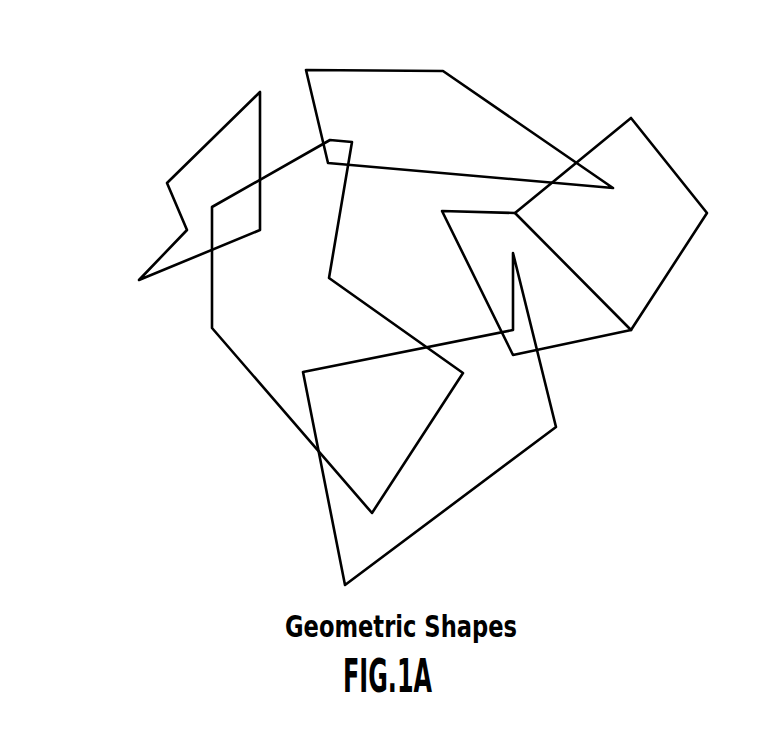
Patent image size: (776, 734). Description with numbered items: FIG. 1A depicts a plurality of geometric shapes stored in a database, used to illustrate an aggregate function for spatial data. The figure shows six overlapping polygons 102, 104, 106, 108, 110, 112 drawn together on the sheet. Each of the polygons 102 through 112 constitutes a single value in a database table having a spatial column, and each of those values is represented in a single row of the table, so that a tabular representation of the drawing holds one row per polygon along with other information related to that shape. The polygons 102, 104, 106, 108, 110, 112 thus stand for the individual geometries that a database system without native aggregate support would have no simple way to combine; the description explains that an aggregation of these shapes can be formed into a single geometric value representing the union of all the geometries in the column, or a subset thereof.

The polygon 102 is at (475, 90).
The polygon 104 is at (675, 172).
The polygon 106 is at (607, 335).
The polygon 108 is at (505, 465).
The polygon 110 is at (252, 376).
The polygon 112 is at (172, 197).